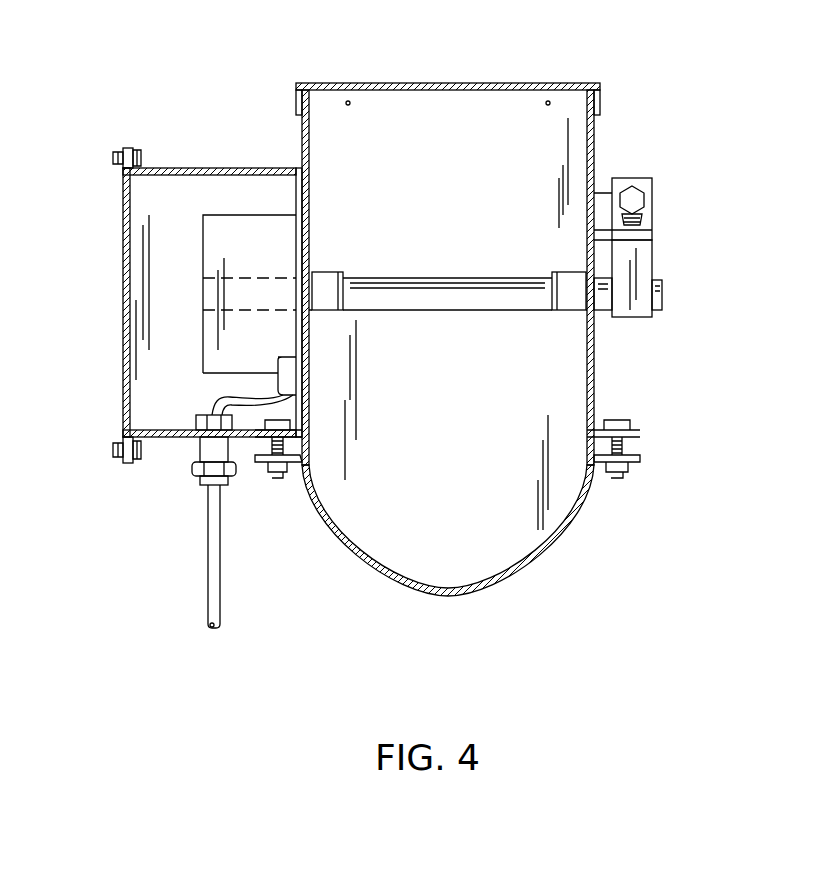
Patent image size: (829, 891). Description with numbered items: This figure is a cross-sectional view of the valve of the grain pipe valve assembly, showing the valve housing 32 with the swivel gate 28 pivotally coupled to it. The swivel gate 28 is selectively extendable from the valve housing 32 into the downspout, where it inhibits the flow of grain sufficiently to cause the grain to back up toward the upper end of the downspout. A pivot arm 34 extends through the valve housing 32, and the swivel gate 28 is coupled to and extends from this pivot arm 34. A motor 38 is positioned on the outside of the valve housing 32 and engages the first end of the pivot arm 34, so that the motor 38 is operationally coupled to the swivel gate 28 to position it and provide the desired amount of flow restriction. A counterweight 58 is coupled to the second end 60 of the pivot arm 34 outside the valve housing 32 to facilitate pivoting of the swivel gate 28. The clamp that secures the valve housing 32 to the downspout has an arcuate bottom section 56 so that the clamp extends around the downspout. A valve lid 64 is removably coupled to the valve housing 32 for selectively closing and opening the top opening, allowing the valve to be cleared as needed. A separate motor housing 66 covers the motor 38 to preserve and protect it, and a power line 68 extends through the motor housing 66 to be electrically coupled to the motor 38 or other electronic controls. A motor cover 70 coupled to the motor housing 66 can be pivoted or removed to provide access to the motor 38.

The swivel gate 28 is at (522, 372).
The valve housing 32 is at (594, 145).
The pivot arm 34 is at (258, 288).
The motor 38 is at (228, 232).
The bottom section 56 is at (563, 526).
The counterweight 58 is at (648, 210).
The second end 60 is at (662, 295).
The valve lid 64 is at (453, 84).
The motor housing 66 is at (176, 168).
The power line 68 is at (210, 558).
The motor cover 70 is at (123, 300).